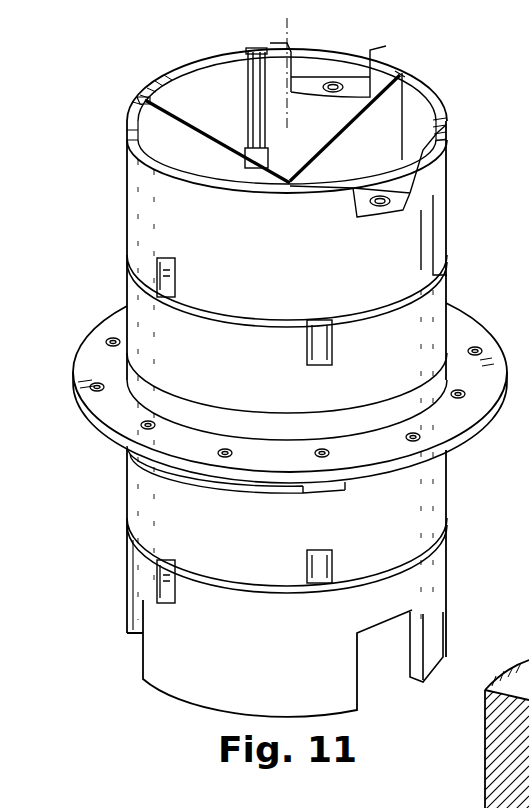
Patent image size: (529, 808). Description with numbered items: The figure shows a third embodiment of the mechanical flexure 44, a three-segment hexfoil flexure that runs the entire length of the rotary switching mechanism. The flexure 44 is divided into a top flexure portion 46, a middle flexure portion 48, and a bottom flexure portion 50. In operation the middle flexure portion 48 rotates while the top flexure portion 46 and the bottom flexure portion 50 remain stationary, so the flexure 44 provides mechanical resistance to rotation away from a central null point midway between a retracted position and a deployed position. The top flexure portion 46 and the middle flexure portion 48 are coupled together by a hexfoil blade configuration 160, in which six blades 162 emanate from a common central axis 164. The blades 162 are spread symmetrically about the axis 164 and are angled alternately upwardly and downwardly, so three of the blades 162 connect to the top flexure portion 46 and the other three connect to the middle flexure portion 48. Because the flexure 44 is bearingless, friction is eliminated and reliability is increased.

The mechanical flexure 44 is at (97, 117).
The top flexure portion 46 is at (430, 213).
The middle flexure portion 48 is at (430, 322).
The bottom flexure portion 50 is at (410, 587).
The hexfoil blade configuration 160 is at (341, 50).
The blades 162 is at (197, 128).
The central axis 164 is at (244, 62).